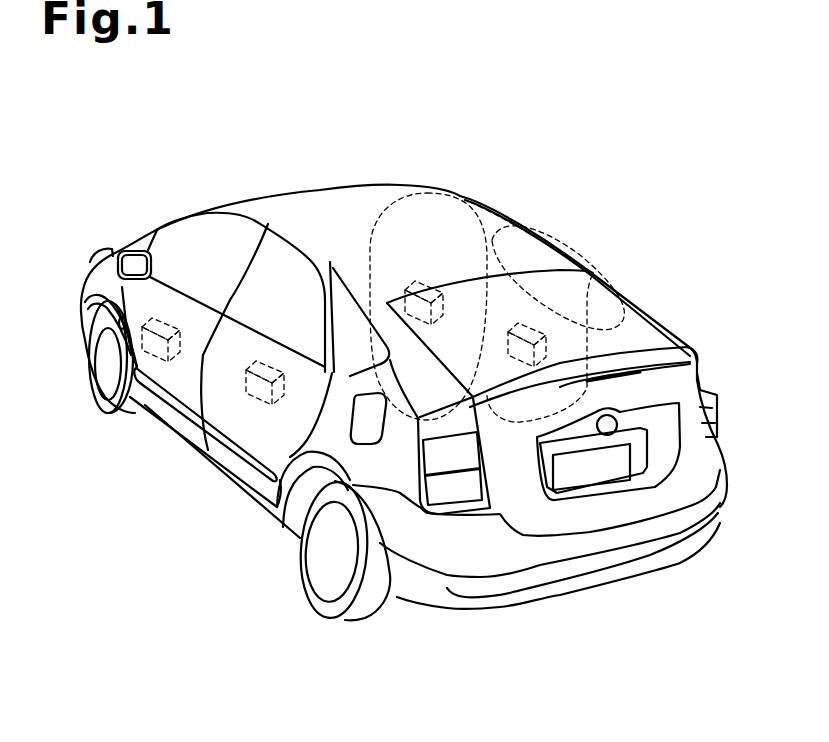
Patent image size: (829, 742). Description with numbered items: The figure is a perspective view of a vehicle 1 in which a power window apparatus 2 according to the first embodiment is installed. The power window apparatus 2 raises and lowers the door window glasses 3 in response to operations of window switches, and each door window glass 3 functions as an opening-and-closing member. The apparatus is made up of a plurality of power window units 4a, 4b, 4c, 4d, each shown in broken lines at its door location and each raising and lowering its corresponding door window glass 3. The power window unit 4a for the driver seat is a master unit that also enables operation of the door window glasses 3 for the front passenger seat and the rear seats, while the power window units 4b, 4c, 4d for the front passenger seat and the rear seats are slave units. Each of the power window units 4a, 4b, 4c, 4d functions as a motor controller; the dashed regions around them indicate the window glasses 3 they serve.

The vehicle 1 is at (450, 185).
The power window apparatus 2 is at (365, 146).
The door window glass 3 is at (523, 222).
The power window unit 4a is at (413, 280).
The power window unit 4b is at (160, 318).
The power window unit 4c is at (537, 327).
The power window unit 4d is at (270, 368).